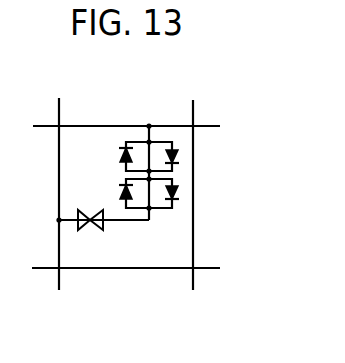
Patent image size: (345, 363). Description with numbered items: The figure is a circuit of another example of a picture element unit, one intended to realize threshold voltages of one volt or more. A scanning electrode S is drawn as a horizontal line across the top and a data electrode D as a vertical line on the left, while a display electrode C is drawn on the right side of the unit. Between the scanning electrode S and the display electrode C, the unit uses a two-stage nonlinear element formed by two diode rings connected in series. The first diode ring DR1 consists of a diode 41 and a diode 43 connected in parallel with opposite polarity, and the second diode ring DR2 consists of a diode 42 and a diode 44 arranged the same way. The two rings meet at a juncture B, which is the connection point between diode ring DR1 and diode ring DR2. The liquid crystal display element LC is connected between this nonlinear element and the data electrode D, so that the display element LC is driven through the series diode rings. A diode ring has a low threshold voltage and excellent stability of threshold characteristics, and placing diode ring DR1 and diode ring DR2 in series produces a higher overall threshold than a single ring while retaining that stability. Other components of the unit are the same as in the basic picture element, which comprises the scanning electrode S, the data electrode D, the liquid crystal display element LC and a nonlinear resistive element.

The diode 41 is at (118, 156).
The diode 42 is at (118, 192).
The diode 43 is at (181, 141).
The diode 44 is at (170, 189).
The data electrode D is at (58, 112).
The scanning electrode S is at (35, 128).
The juncture B is at (151, 173).
The display electrode C is at (150, 210).
The liquid crystal display element LC is at (93, 233).
The diode ring DR1 is at (183, 145).
The diode ring DR2 is at (183, 181).